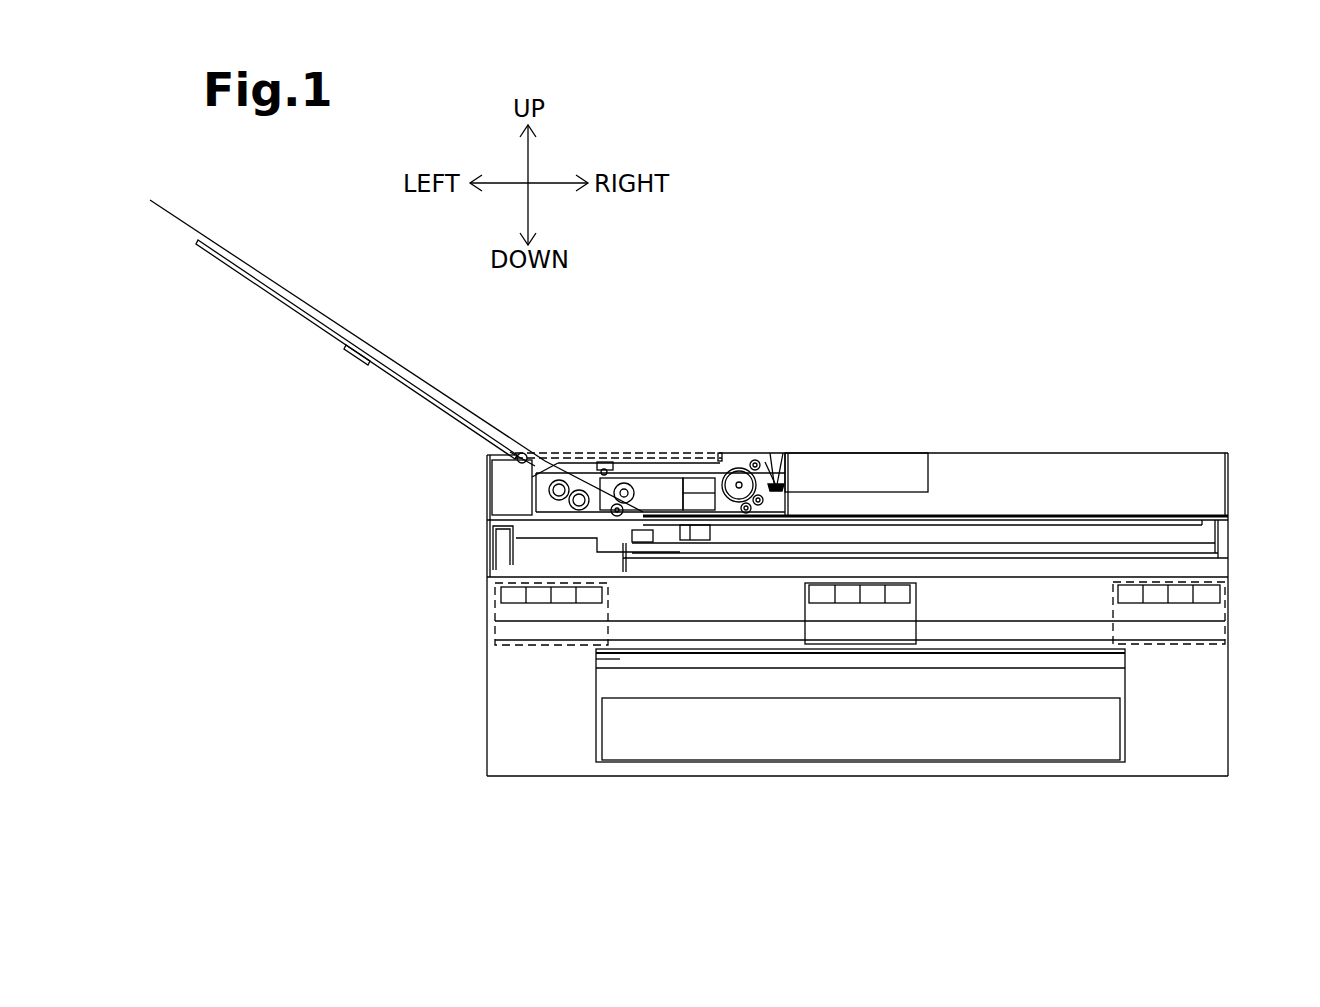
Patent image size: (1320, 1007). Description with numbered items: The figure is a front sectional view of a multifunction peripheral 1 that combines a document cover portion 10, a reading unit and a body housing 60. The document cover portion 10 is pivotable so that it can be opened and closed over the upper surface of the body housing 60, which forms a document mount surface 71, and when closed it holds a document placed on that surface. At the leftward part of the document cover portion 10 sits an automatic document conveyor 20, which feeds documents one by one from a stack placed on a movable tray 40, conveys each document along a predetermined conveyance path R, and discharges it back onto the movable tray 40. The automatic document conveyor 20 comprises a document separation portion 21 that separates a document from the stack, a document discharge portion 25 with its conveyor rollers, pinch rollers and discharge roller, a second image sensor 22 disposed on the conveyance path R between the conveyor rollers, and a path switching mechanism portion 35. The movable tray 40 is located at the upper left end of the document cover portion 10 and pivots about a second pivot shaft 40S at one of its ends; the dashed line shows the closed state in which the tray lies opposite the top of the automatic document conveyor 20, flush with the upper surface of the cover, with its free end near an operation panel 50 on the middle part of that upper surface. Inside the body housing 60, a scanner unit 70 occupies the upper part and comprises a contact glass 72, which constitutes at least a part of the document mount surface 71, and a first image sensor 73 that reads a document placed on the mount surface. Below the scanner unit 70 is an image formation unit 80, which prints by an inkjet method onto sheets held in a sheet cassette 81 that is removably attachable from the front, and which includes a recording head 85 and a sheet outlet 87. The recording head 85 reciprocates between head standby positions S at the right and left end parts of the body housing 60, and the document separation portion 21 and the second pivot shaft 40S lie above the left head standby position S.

The multifunction peripheral 1 is at (1160, 314).
The document cover portion 10 is at (1090, 470).
The automatic document conveyor 20 is at (655, 492).
The document separation portion 21 is at (558, 503).
The second image sensor 22 is at (692, 498).
The document discharge portion 25 is at (620, 466).
The path switching mechanism portion 35 is at (770, 453).
The movable tray 40 is at (370, 367).
The second pivot shaft 40S is at (525, 458).
The operation panel 50 is at (873, 462).
The body housing 60 is at (487, 650).
The scanner unit 70 is at (1193, 565).
The document mount surface 71 is at (1015, 517).
The contact glass 72 is at (1170, 520).
The first image sensor 73 is at (640, 531).
The image formation unit 80 is at (1190, 683).
The sheet cassette 81 is at (877, 743).
The recording head 85 is at (908, 610).
The sheet outlet 87 is at (618, 659).
The conveyance path R is at (722, 468).
The head standby positions S is at (495, 620).